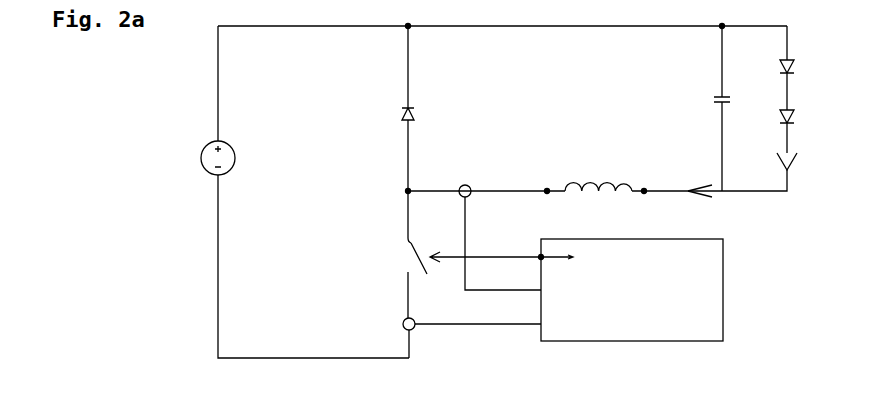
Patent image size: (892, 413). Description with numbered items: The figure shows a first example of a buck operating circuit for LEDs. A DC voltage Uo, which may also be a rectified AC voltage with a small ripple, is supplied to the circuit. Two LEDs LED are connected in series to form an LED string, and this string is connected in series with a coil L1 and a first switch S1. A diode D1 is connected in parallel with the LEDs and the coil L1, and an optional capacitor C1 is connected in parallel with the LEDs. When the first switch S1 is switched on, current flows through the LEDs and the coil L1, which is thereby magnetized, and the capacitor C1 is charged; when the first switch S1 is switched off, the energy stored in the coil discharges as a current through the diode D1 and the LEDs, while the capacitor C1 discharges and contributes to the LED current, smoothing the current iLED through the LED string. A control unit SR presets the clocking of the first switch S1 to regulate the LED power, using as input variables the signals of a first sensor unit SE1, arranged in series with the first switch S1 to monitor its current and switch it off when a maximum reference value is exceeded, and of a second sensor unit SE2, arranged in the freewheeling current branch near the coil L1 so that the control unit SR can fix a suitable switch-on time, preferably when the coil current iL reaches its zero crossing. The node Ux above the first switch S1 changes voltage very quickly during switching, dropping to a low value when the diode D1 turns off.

The DC voltage Uo is at (207, 158).
The diode D1 is at (423, 108).
The node Ux is at (463, 191).
The second sensor unit SE2 is at (496, 229).
The coil L1 is at (595, 176).
The current through the coil iL is at (705, 201).
The capacitor C1 is at (730, 67).
The element LED is at (802, 106).
The current through the LEDs iLED is at (803, 162).
The first switch S1 is at (404, 254).
The control unit SR is at (576, 290).
The first sensor unit SE1 is at (455, 338).